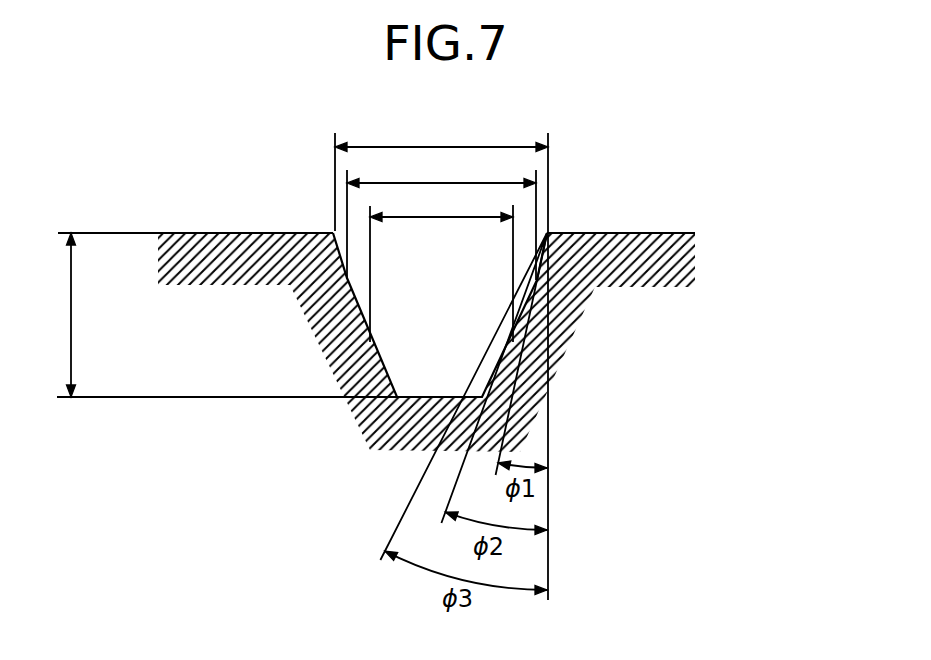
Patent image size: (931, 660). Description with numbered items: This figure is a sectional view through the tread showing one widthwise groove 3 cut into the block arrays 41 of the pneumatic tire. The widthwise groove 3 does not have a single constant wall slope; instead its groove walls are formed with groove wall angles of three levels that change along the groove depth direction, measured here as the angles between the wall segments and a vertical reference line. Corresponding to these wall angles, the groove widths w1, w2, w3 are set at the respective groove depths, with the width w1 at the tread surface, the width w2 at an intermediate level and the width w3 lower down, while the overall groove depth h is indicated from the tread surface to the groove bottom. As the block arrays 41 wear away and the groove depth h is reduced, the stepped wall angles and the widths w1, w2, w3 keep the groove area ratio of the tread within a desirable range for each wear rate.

The widthwise groove 3 is at (437, 317).
The block array 41 is at (622, 232).
The groove depth h is at (219, 315).
The groove width w1 is at (441, 359).
The groove width w2 is at (441, 217).
The groove width w3 is at (441, 265).